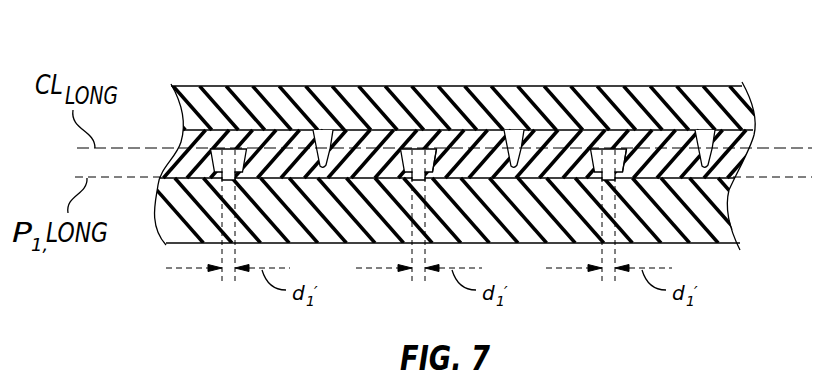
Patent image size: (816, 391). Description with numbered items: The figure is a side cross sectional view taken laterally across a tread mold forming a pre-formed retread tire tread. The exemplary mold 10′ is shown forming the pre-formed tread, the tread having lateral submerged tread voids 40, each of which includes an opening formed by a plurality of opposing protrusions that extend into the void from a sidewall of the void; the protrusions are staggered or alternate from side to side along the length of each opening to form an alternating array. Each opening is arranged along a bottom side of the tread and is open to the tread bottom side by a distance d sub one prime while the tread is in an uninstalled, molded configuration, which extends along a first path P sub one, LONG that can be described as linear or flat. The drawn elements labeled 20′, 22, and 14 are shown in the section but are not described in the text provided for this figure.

The mold 10′ is at (718, 86).
The second substrate 20′ is at (735, 162).
The bonding layer 22 is at (273, 130).
The anchoring element 14 is at (402, 147).
The lateral submerged tread void 40 is at (437, 158).